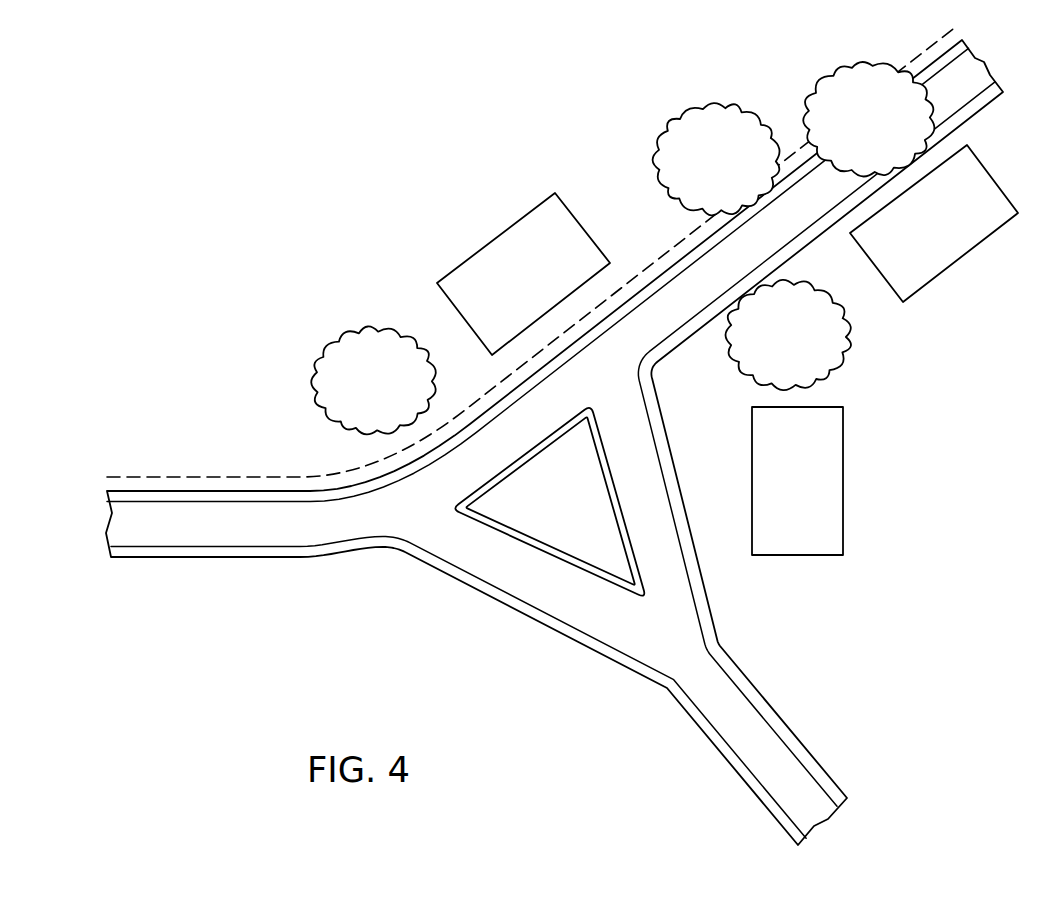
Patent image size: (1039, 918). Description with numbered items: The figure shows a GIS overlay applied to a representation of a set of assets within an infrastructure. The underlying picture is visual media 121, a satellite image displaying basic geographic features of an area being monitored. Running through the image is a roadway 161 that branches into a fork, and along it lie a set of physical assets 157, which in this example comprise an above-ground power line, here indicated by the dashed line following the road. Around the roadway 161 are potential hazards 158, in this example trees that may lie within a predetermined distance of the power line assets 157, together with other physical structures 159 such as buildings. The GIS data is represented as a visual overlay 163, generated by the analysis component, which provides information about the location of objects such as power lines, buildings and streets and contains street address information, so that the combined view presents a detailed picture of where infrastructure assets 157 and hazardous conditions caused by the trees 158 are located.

The visual media 121 is at (208, 181).
The physical asset 157 is at (658, 257).
The potential hazard 158 is at (366, 335).
The physical structure 159 is at (506, 233).
The roadway 161 is at (248, 544).
The visual overlay 163 is at (508, 473).